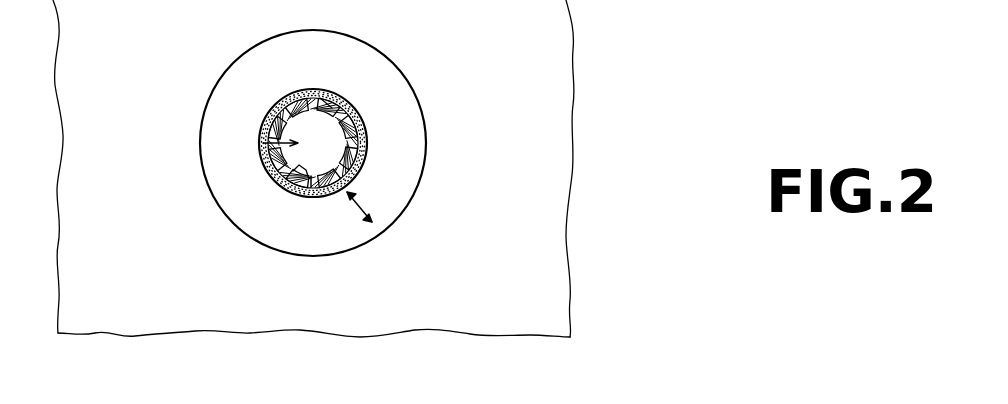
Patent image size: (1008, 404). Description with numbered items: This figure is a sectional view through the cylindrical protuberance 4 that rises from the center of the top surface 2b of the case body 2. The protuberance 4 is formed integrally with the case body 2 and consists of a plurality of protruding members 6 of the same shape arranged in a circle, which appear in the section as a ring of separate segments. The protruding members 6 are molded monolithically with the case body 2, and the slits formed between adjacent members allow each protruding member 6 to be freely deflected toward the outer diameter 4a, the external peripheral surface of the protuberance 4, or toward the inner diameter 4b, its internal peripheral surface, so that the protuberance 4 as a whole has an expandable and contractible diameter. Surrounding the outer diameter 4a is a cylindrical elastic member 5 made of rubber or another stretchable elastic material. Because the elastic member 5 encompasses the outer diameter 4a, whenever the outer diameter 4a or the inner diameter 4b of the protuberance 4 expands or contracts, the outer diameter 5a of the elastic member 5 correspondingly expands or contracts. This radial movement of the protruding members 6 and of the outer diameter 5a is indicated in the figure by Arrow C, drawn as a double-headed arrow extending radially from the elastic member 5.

The case body 2 is at (557, 42).
The top surface 2b is at (550, 248).
The cylindrical protuberance 4 is at (262, 143).
The outer diameter 4a is at (330, 190).
The inner diameter 4b is at (297, 200).
The elastic member 5 is at (403, 108).
The outer diameter of elastic member 5a is at (365, 150).
The protruding members 6 is at (333, 92).
The Arrow C is at (367, 203).